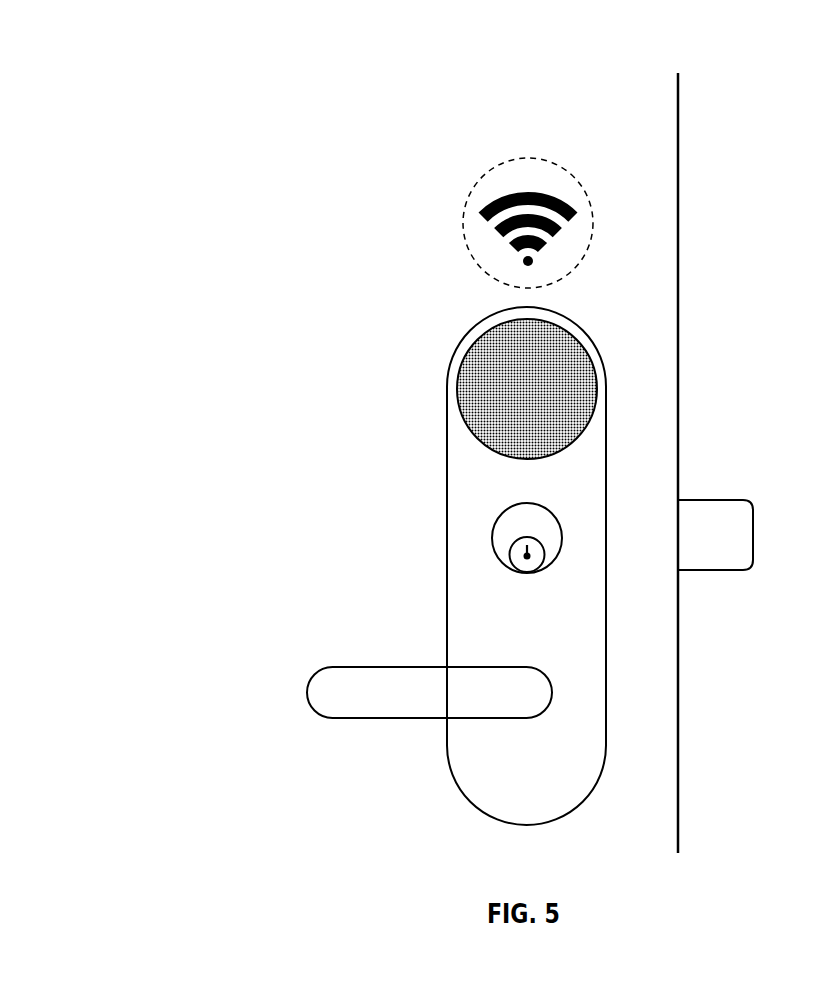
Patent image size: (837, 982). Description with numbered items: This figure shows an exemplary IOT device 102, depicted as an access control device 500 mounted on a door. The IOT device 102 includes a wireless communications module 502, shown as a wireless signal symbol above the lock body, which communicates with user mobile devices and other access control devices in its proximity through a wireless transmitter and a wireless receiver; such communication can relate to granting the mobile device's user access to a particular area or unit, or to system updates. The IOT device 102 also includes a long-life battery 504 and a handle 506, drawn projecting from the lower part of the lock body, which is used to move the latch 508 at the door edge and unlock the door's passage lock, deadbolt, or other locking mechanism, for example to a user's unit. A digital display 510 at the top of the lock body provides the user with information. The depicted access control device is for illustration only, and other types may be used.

The smart lock 500 is at (531, 27).
The IOT device 102 is at (153, 103).
The wireless communications module 502 is at (528, 132).
The long-life battery 504 is at (229, 500).
The handle 506 is at (289, 692).
The latch 508 is at (772, 535).
The digital display 510 is at (581, 382).